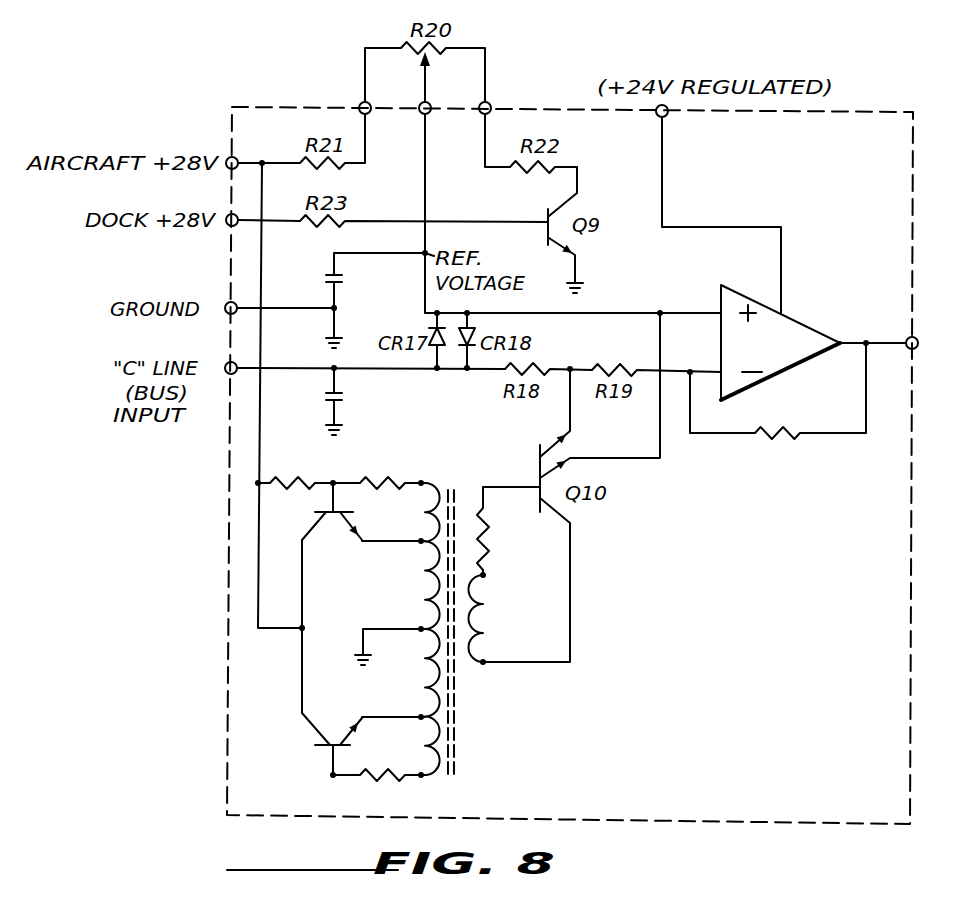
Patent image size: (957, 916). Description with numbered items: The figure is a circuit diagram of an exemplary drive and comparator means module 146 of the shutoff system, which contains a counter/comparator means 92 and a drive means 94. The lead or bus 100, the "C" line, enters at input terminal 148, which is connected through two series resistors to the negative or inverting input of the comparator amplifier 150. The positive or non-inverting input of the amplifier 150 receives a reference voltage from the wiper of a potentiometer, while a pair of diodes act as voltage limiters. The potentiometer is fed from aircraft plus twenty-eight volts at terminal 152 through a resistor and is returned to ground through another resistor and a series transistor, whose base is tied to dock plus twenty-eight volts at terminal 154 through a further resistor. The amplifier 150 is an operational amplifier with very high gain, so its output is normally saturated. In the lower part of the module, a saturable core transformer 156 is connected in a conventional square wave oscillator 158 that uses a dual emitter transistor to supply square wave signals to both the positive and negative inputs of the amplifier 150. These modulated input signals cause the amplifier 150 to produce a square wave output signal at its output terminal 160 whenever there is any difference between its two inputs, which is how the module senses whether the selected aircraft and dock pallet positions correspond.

The counter/comparator means 92 is at (835, 237).
The drive means 94 is at (620, 532).
The lead or bus 100 is at (227, 362).
The drive and comparator means module 146 is at (228, 697).
The input terminal 148 is at (233, 376).
The comparator amplifier 150 is at (804, 324).
The aircraft +28 volt terminal 152 is at (230, 157).
The dock +28 volt terminal 154 is at (228, 226).
The saturable core transformer 156 is at (460, 495).
The square wave oscillator 158 is at (504, 708).
The output terminal 160 is at (906, 339).